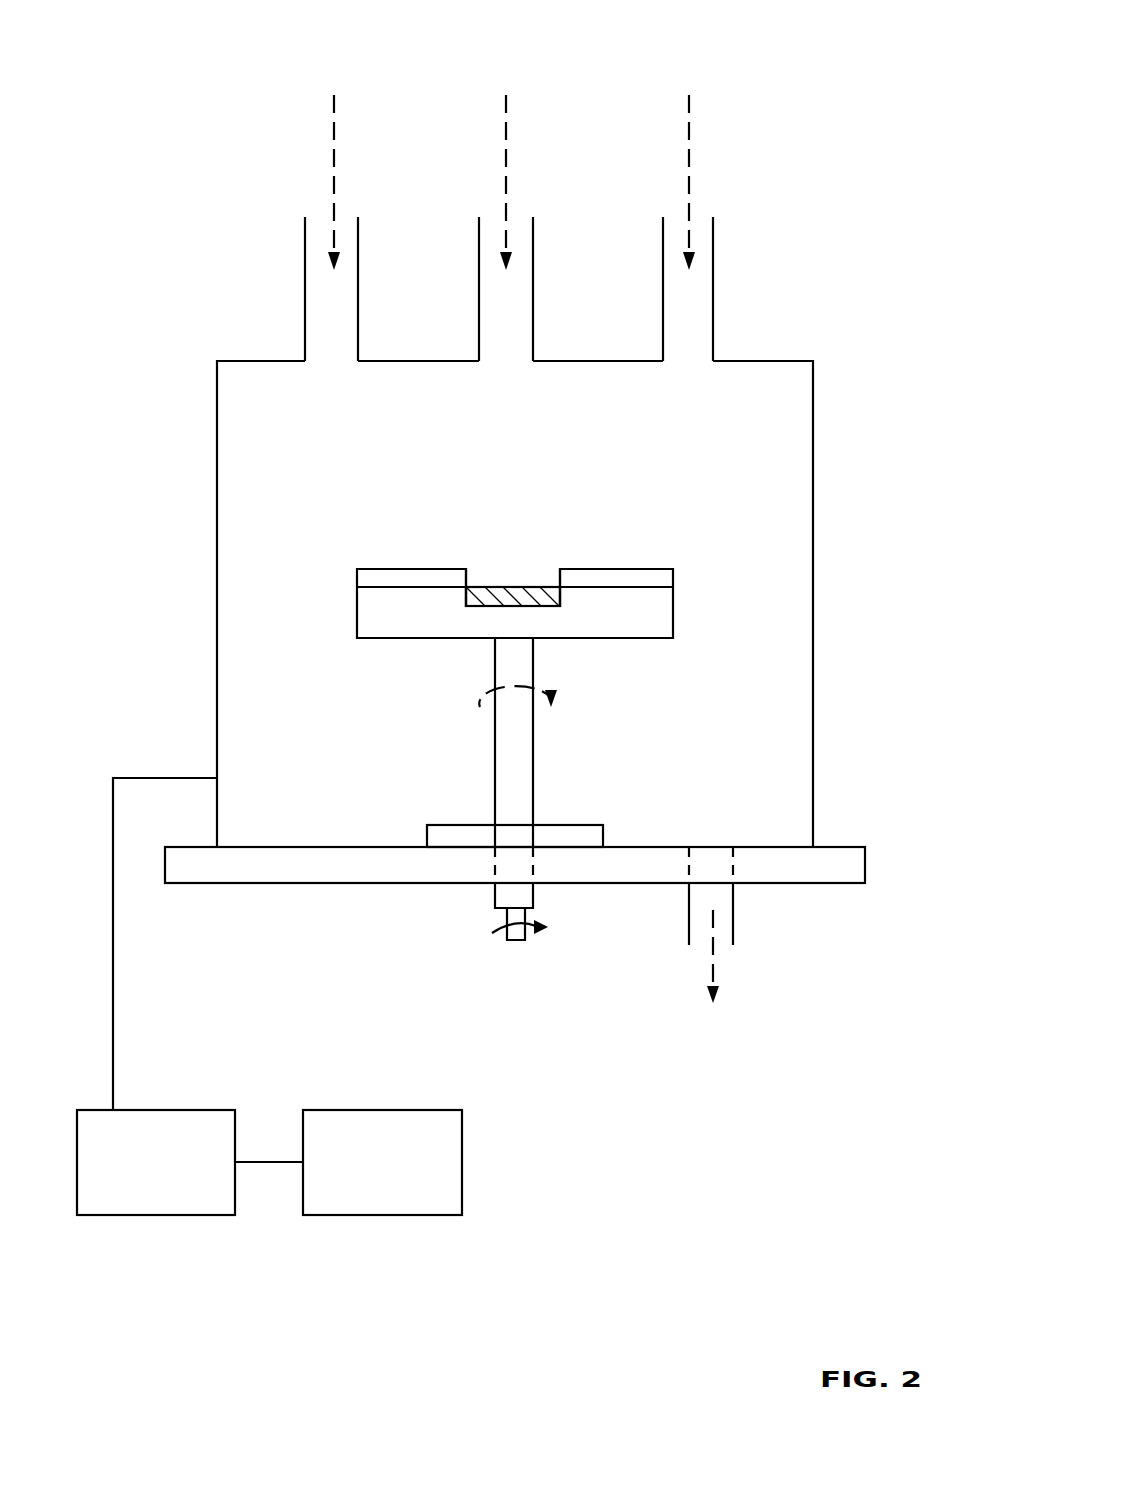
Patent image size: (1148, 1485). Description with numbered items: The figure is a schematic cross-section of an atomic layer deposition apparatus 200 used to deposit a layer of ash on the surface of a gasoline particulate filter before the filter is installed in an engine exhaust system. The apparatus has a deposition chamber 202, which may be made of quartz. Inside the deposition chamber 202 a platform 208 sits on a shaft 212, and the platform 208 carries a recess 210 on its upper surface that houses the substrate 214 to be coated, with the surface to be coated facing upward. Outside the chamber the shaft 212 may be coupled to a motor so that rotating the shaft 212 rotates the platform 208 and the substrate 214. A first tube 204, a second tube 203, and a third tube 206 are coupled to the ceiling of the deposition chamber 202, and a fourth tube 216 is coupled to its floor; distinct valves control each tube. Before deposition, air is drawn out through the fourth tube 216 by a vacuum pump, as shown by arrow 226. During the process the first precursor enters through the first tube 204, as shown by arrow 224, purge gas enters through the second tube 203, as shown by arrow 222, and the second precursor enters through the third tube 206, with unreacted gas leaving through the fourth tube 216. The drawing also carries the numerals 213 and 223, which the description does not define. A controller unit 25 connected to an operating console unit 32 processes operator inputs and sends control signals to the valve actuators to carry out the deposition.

The atomic layer deposition apparatus 200 is at (852, 37).
The deposition chamber 202 is at (217, 587).
The second tube 203 is at (479, 315).
The first tube 204 is at (305, 315).
The third tube 206 is at (713, 302).
The platform 208 is at (428, 638).
The recess 210 is at (558, 606).
The shaft 212 is at (533, 787).
The rotation actuator 213 is at (517, 942).
The substrate 214 is at (514, 590).
The fourth tube 216 is at (733, 900).
The arrow 222 is at (690, 163).
The gas flow 223 is at (505, 146).
The arrow 224 is at (333, 146).
The arrow 226 is at (713, 952).
The controller unit 25 is at (190, 1162).
The operating console unit 32 is at (382, 1162).